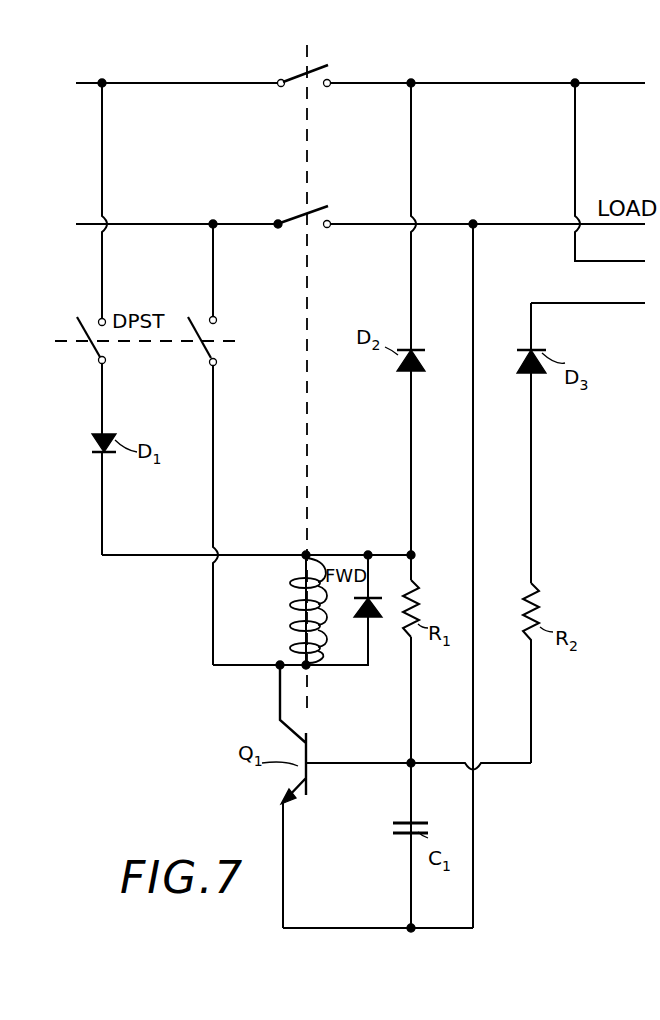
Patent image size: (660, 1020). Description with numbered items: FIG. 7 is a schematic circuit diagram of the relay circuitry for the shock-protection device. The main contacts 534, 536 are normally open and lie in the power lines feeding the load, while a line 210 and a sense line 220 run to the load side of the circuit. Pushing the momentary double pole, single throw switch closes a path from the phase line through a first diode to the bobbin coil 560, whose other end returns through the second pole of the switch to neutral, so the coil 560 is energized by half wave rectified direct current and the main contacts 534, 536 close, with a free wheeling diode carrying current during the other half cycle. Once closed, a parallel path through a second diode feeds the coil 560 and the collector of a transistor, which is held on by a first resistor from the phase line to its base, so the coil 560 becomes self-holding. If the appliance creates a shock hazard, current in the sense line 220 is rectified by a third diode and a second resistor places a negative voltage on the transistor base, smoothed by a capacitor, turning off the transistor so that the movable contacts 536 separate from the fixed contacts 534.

The movable contacts 536 is at (298, 72).
The fixed contacts 534 is at (332, 78).
The load conductor 210 is at (636, 263).
The sense line 220 is at (594, 308).
The bobbin coil 560 is at (296, 604).